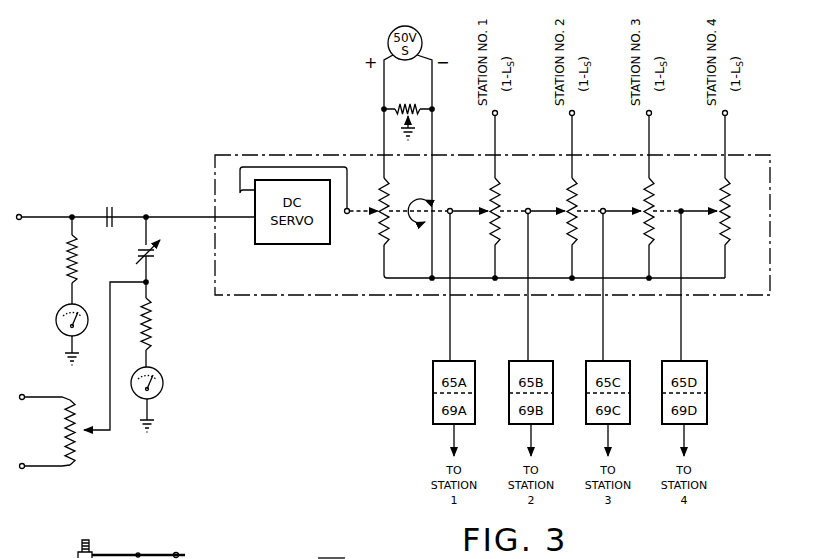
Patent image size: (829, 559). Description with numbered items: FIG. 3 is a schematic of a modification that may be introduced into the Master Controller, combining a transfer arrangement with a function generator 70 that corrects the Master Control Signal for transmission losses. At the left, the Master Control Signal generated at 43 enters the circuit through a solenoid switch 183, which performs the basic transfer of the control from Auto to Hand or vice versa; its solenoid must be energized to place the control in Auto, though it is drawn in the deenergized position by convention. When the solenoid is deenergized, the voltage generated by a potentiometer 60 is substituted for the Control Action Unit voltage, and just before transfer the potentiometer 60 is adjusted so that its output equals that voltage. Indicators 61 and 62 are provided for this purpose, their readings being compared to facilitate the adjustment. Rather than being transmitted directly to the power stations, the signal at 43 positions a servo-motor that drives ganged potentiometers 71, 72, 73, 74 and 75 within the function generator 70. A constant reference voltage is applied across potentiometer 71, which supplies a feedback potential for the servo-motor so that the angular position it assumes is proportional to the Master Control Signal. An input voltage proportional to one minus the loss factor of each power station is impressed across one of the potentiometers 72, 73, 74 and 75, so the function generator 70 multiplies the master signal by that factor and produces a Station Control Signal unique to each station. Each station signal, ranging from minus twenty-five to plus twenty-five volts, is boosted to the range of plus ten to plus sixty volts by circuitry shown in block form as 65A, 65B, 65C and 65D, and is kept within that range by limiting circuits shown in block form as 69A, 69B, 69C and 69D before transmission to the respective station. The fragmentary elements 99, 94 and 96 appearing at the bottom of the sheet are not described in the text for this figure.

The Master Control Signal terminal 43 is at (19, 214).
The solenoid switch 183 is at (108, 205).
The indicator 61 is at (58, 312).
The indicator 62 is at (163, 377).
The potentiometer 60 is at (76, 445).
The function generator 70 is at (760, 287).
The potentiometer 71 is at (392, 238).
The potentiometer 72 is at (490, 227).
The potentiometer 73 is at (567, 227).
The potentiometer 74 is at (644, 227).
The potentiometer 75 is at (720, 227).
The boosting circuitry 65A is at (454, 392).
The limiting circuit 69A is at (454, 408).
The boosting circuitry 65B is at (531, 392).
The limiting circuit 69B is at (531, 408).
The boosting circuitry 65C is at (608, 392).
The limiting circuit 69C is at (608, 408).
The boosting circuitry 65D is at (684, 392).
The limiting circuit 69D is at (684, 408).
The terminal block 99 is at (76, 557).
The bar 94 is at (118, 553).
The member 96 is at (331, 556).